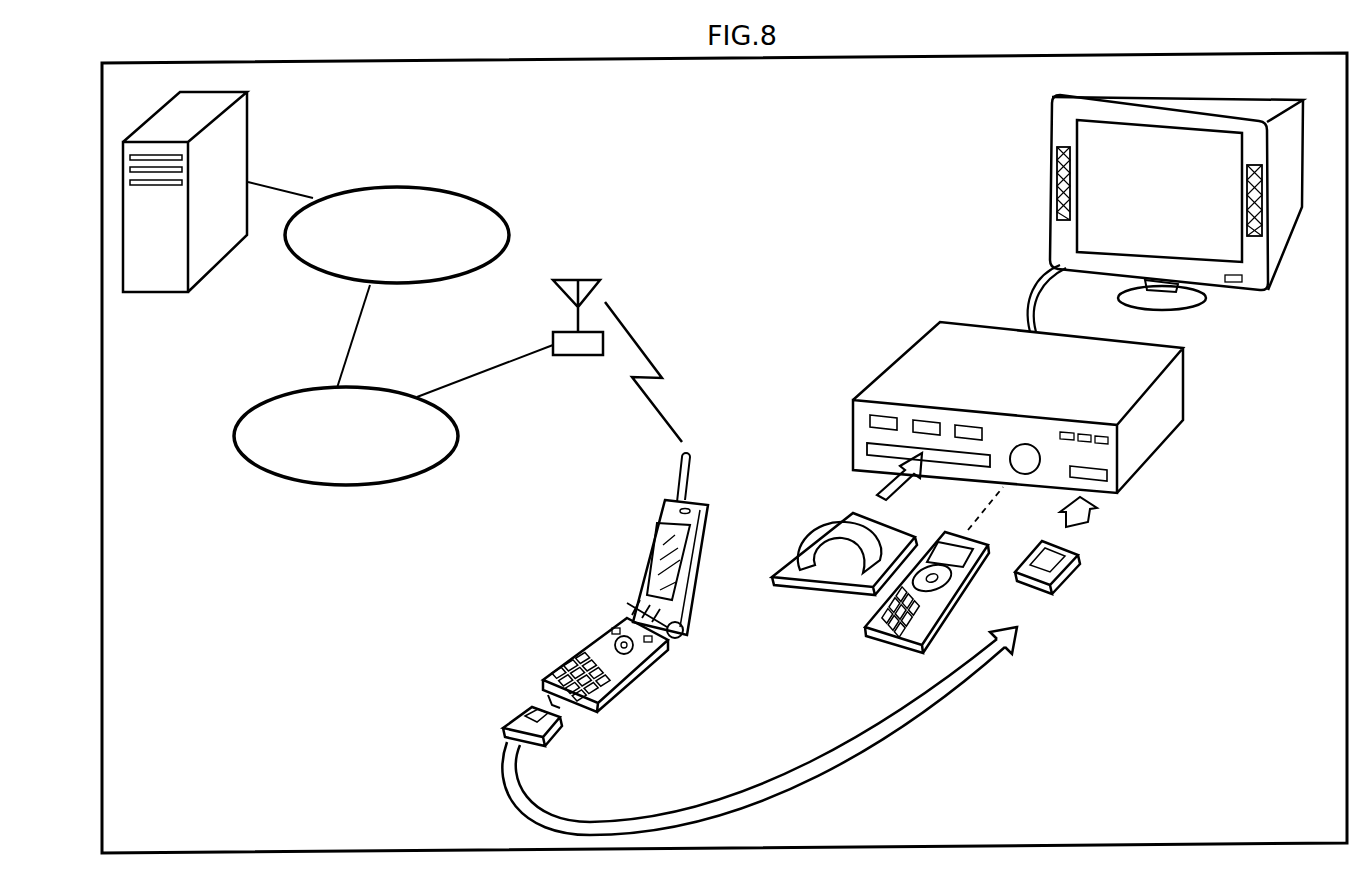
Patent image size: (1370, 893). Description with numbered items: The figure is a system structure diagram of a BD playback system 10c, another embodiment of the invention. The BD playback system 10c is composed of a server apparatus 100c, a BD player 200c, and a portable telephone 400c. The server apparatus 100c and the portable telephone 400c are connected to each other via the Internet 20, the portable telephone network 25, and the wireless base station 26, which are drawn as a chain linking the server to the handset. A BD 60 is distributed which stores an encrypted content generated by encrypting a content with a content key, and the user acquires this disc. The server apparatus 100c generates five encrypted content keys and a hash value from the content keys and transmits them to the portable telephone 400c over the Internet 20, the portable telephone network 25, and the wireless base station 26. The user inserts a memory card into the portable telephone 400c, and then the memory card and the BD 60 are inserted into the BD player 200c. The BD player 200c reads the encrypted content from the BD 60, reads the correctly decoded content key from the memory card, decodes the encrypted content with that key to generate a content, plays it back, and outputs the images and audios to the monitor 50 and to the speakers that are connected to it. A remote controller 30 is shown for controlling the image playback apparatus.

The BD playback system 10c is at (898, 57).
The server apparatus 100c is at (248, 122).
The Internet 20 is at (473, 197).
The portable telephone network 25 is at (270, 476).
The wireless base station 26 is at (553, 337).
The portable telephone 400c is at (660, 518).
The BD 60 is at (800, 543).
The remote controller 30 is at (860, 622).
The BD player 200c is at (1173, 440).
The monitor 50 is at (1162, 209).